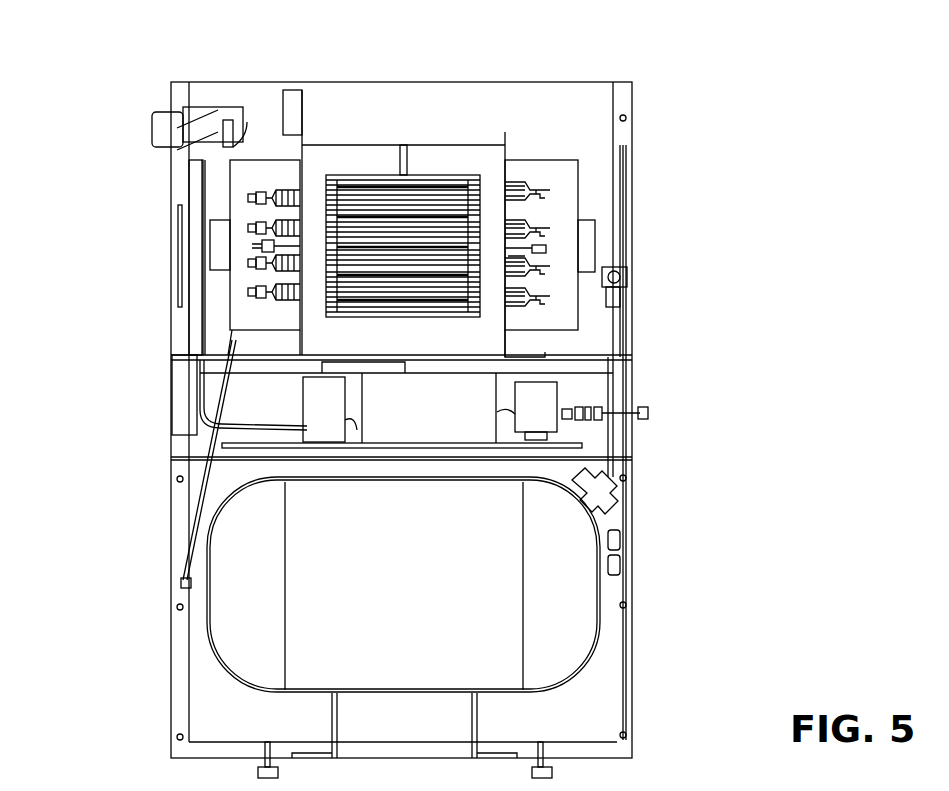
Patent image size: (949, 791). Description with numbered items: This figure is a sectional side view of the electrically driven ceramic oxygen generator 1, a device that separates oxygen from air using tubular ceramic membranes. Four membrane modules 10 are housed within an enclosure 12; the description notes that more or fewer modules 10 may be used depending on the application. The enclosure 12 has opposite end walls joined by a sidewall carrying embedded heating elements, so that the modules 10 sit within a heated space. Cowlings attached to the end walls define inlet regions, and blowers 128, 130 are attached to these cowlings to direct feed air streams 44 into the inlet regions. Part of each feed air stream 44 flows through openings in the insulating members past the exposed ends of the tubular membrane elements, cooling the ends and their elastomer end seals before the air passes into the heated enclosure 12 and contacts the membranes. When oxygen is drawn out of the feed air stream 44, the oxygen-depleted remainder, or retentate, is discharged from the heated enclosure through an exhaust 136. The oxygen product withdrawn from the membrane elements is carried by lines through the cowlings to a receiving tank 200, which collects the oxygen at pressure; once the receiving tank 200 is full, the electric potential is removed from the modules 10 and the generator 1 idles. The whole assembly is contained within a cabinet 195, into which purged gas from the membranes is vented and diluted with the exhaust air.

The ceramic oxygen generator 1 is at (93, 57).
The module 10 is at (527, 176).
The enclosure 12 is at (368, 157).
The feed air stream 44 is at (200, 248).
The blower 128 is at (210, 267).
The blower 130 is at (585, 250).
The exhaust 136 is at (405, 163).
The cabinet 195 is at (633, 180).
The receiving tank 200 is at (568, 634).